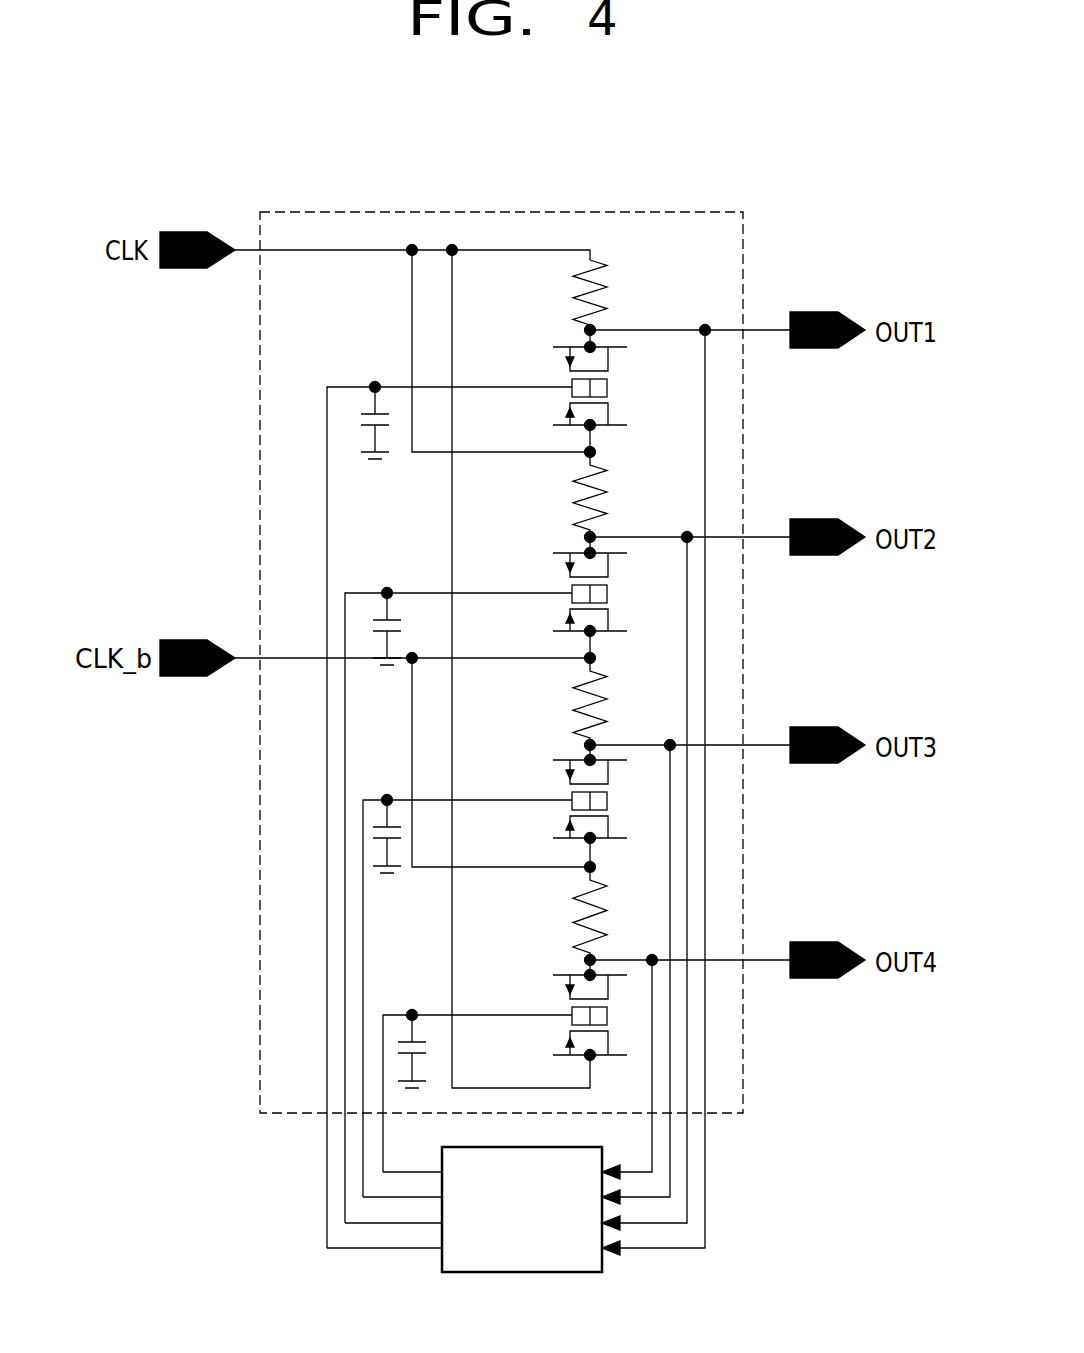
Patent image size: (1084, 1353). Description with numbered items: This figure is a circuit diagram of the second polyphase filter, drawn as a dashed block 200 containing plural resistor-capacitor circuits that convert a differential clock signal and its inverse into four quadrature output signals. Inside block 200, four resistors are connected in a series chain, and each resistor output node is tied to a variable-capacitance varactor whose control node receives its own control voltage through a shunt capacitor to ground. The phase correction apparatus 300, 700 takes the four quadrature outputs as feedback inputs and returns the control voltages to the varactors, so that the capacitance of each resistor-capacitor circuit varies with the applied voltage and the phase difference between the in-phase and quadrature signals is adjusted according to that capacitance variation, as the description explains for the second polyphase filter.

The variable delay circuit (resistor-varactor delay line) 200 is at (500, 211).
The phase correction apparatus 300 is at (522, 1244).
The phase correction apparatus 700 is at (520, 1273).